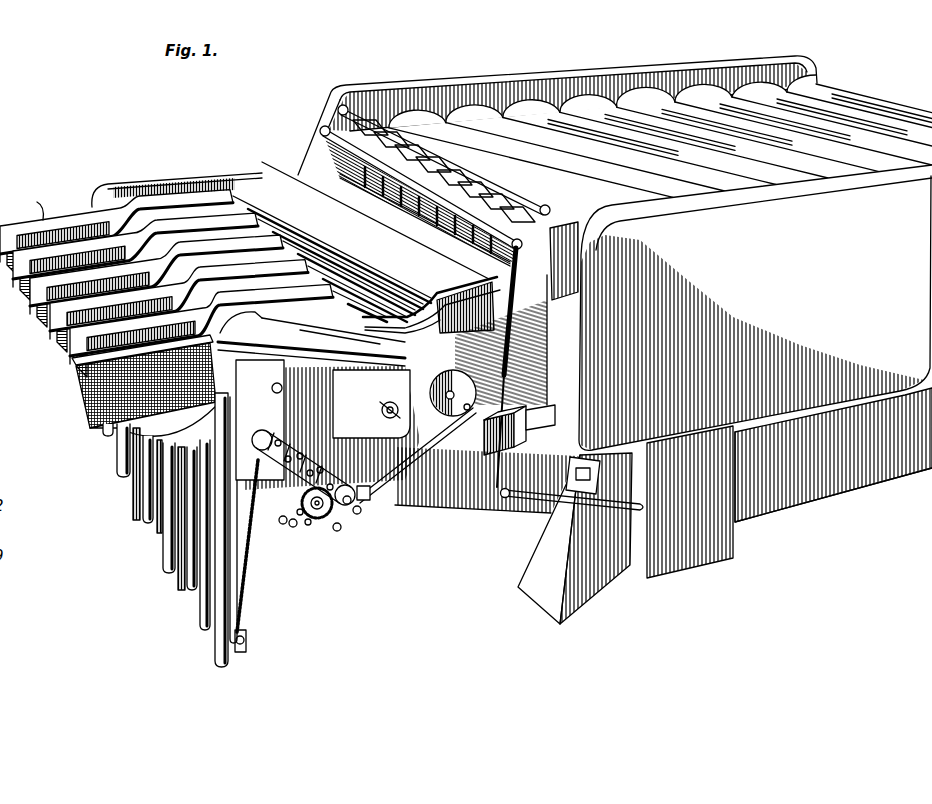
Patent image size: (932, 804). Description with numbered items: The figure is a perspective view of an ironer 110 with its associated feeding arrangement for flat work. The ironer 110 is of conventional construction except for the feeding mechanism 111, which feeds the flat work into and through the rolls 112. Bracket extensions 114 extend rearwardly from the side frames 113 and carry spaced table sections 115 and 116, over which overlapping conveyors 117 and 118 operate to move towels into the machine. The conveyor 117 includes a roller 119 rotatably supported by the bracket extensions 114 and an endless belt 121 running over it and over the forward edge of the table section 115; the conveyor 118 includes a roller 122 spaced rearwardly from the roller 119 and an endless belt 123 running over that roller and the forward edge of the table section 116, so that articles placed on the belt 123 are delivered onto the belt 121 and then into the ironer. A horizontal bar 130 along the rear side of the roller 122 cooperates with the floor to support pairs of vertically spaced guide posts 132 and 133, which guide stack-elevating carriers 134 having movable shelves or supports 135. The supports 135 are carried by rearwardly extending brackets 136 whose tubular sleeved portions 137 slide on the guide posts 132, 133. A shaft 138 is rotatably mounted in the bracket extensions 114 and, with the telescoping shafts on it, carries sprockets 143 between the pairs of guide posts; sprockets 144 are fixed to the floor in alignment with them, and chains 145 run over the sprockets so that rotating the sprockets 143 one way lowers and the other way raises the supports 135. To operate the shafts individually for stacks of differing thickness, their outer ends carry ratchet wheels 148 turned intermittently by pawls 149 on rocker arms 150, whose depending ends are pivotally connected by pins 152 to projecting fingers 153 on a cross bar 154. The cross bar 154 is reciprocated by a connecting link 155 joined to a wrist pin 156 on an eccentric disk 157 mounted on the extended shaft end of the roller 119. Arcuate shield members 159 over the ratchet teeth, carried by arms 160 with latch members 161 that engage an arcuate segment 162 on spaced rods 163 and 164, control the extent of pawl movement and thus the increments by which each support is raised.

The ironer 110 is at (615, 244).
The feeding mechanism 111 is at (118, 473).
The rolls 112 is at (857, 93).
The side frames 113 is at (868, 470).
The bracket extensions 114 is at (510, 506).
The table section 115 is at (275, 180).
The table section 116 is at (163, 204).
The conveyor 117 is at (460, 318).
The conveyor 118 is at (335, 348).
The roller 119 is at (428, 333).
The endless belt 121 is at (487, 302).
The roller 122 is at (265, 340).
The endless belt 123 is at (300, 343).
The horizontal bar 130 is at (96, 196).
The guide post 132 is at (220, 656).
The guide post 133 is at (200, 620).
The stack-elevating members or carriers 134 is at (100, 431).
The movable shelves or supports 135 is at (62, 365).
The brackets 136 is at (150, 422).
The tubular sleeved portions 137 is at (218, 357).
The shaft 138 is at (318, 520).
The sprockets 143 is at (282, 391).
The sprockets 144 is at (246, 641).
The chains 145 is at (248, 602).
The ratchet wheels 148 is at (308, 526).
The pawls 149 is at (310, 468).
The rocker arms 150 is at (300, 455).
The pins 152 is at (338, 532).
The projecting fingers 153 is at (348, 505).
The cross bar 154 is at (366, 497).
The connecting link 155 is at (408, 494).
The wrist pin 156 is at (476, 424).
The eccentric disk 157 is at (468, 352).
The arcuate-shaped shield members 159 is at (279, 520).
The arms 160 is at (282, 445).
The latch members 161 is at (320, 480).
The arcuate segment 162 is at (300, 516).
The rod 163 is at (290, 527).
The rod 164 is at (358, 514).